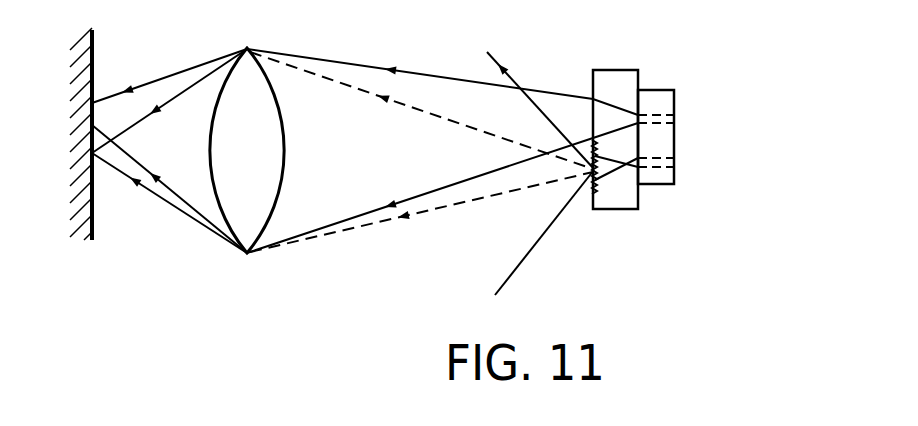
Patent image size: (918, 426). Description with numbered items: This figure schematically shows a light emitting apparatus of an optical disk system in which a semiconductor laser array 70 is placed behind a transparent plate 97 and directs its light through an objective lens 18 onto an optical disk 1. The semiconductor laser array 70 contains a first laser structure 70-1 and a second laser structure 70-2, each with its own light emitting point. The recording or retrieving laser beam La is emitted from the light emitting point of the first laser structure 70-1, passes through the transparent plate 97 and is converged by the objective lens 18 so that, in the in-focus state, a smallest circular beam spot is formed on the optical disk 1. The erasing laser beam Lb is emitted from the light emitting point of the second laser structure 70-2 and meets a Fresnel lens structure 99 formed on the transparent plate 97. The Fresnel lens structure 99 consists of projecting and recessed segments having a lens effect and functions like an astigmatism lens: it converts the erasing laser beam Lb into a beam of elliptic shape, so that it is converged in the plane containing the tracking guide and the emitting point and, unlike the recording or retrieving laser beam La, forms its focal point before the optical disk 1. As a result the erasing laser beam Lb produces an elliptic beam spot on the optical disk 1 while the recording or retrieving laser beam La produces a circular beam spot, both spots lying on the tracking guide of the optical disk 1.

The optical disk 1 is at (80, 213).
The objective lens 18 is at (253, 98).
The transparent plate 97 is at (610, 80).
The Fresnel lens structure 99 is at (596, 195).
The semiconductor laser array 70 is at (655, 105).
The first laser structure 70-1 is at (664, 121).
The second laser structure 70-2 is at (664, 166).
The recording or retrieving laser beam La is at (365, 218).
The erasing laser beam Lb is at (472, 203).